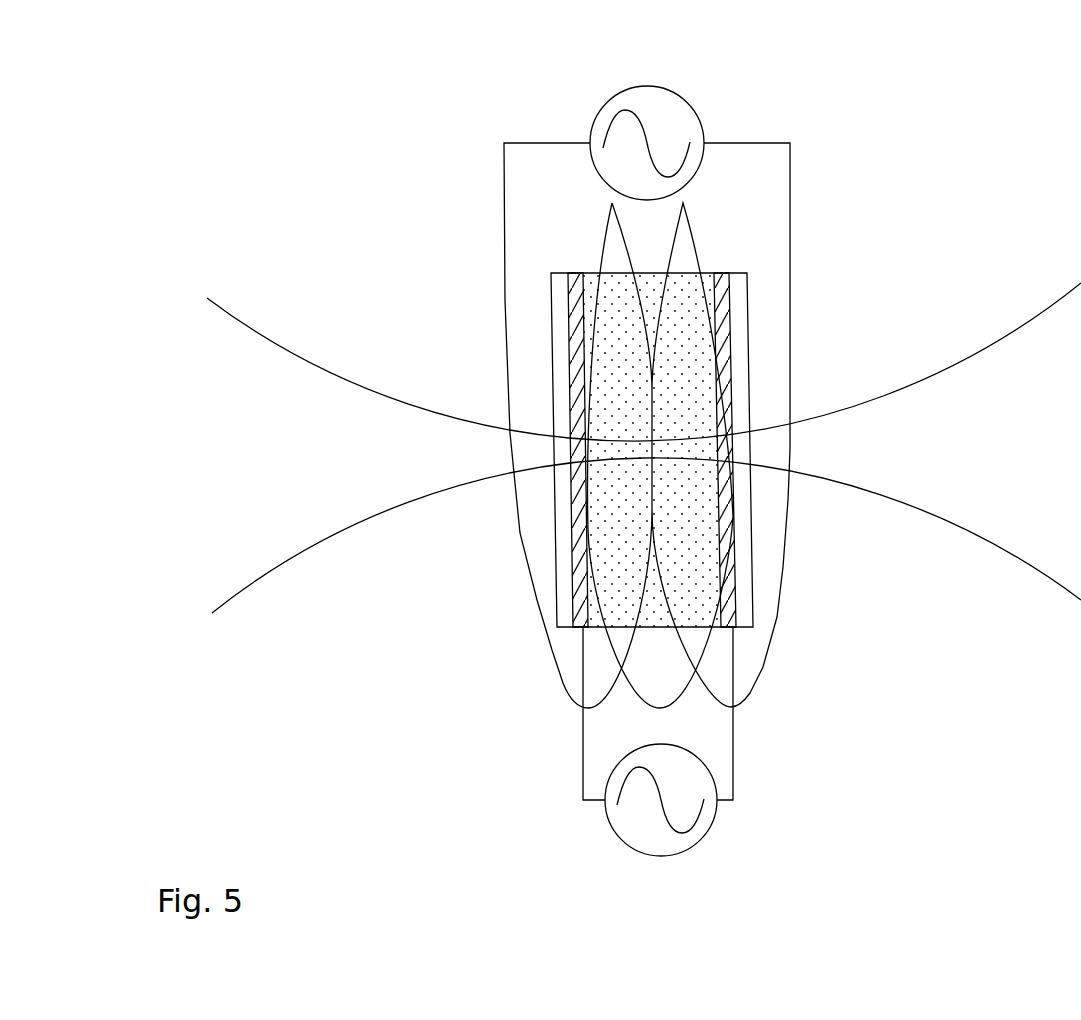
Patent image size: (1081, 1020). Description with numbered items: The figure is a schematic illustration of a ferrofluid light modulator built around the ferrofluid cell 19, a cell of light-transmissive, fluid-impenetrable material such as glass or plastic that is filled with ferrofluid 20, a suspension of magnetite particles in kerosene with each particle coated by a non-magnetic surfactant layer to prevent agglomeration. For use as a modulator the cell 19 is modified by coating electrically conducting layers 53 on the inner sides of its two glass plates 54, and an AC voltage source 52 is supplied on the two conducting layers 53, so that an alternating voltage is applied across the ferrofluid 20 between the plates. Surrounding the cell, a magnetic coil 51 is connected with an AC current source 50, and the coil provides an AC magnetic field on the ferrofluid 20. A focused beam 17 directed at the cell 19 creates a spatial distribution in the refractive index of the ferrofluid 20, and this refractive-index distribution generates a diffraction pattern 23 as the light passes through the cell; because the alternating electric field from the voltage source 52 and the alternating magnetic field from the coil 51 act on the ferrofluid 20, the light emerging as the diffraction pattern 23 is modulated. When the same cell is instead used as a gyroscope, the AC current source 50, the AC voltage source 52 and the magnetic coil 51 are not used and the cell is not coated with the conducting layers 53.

The focused beam 17 is at (330, 370).
The ferrofluid cell 19 is at (553, 540).
The ferrofluid 20 is at (606, 314).
The diffraction pattern 23 is at (972, 354).
The AC current source 50 is at (668, 87).
The magnetic coil 51 is at (535, 628).
The AC voltage source 52 is at (647, 857).
The electrically conducting layers 53 is at (732, 515).
The glass plates 54 is at (745, 607).